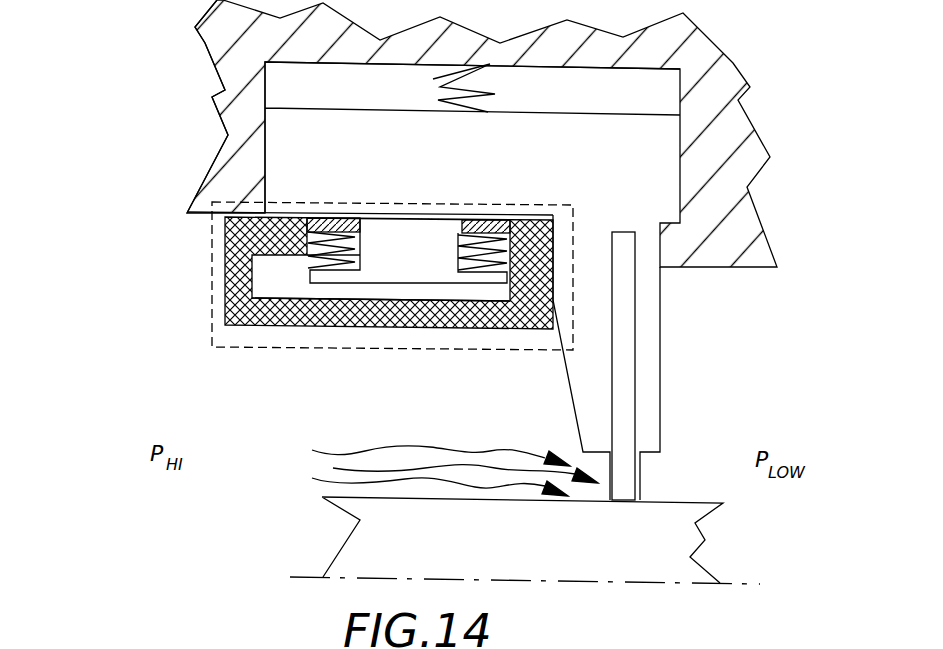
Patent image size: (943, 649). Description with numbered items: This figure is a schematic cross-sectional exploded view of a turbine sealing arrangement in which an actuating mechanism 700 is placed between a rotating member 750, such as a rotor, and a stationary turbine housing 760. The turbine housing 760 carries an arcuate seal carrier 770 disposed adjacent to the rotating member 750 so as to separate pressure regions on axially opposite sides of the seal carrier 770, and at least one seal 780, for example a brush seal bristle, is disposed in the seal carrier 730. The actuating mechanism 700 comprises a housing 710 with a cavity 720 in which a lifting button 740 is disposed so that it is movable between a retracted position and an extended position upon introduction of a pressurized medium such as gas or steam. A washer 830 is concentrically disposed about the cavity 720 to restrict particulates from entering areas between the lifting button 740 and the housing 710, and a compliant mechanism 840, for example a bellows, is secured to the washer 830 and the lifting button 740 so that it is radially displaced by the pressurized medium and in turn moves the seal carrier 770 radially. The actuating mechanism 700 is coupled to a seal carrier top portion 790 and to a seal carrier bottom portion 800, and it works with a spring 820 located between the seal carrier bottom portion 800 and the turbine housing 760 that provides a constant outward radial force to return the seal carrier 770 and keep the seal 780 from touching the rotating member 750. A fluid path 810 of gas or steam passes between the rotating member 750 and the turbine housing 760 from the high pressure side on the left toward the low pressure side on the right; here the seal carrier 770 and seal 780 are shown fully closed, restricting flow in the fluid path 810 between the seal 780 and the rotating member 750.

The actuating mechanism 700 is at (212, 347).
The housing 710 is at (455, 330).
The cavity 720 is at (397, 293).
The seal carrier 730 is at (268, 264).
The button 740 is at (383, 257).
The rotating member 750 is at (383, 535).
The turbine housing 760 is at (210, 18).
The seal carrier 770 is at (232, 72).
The seal 780 is at (622, 407).
The seal carrier top portion 790 is at (326, 108).
The seal carrier bottom portion 800 is at (458, 233).
The fluid path 810 is at (448, 470).
The spring 820 is at (475, 86).
The washer 830 is at (227, 233).
The compliant mechanism 840 is at (313, 267).